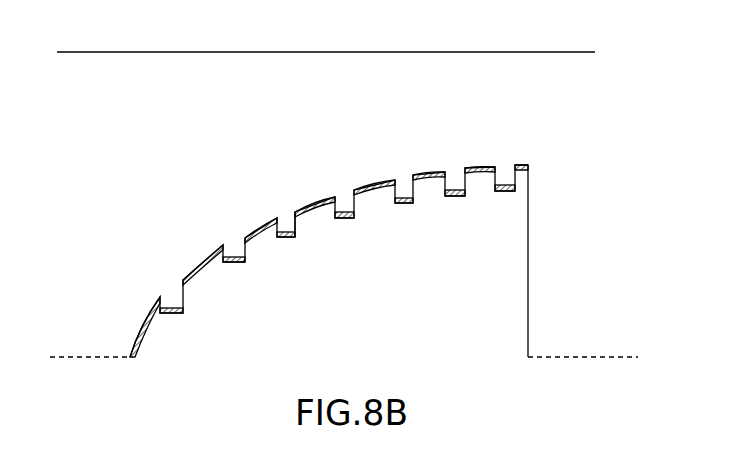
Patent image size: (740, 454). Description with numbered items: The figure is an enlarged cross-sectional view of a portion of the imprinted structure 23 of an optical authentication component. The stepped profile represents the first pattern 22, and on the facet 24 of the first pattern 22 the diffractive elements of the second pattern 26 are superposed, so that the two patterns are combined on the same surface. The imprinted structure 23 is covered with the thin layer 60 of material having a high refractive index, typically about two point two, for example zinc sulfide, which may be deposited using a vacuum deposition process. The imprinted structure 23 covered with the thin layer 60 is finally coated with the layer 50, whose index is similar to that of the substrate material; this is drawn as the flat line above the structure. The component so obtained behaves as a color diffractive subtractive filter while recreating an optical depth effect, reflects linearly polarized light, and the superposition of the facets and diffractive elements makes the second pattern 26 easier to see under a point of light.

The layer 50 is at (487, 68).
The imprinted structure 23 is at (362, 211).
The facet 24 is at (200, 263).
The second pattern 26 is at (288, 222).
The thin layer 60 is at (485, 167).
The first pattern 22 is at (510, 315).